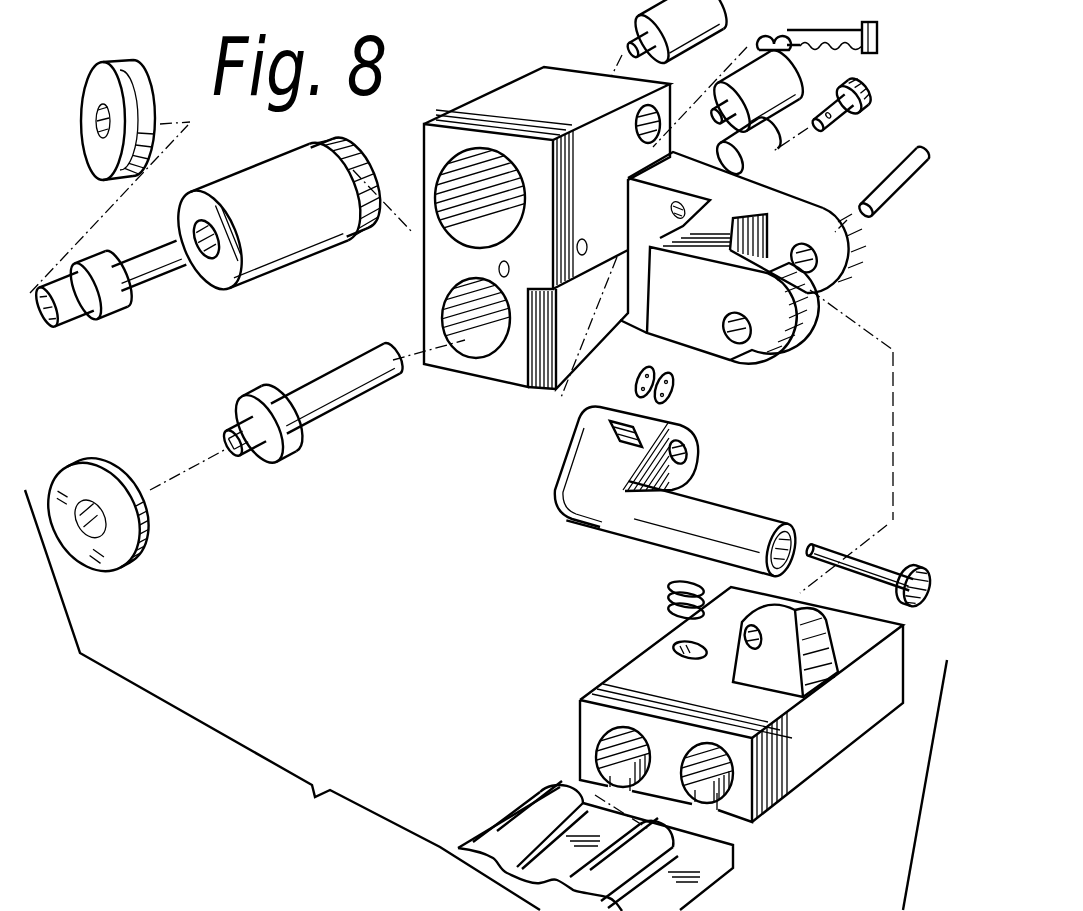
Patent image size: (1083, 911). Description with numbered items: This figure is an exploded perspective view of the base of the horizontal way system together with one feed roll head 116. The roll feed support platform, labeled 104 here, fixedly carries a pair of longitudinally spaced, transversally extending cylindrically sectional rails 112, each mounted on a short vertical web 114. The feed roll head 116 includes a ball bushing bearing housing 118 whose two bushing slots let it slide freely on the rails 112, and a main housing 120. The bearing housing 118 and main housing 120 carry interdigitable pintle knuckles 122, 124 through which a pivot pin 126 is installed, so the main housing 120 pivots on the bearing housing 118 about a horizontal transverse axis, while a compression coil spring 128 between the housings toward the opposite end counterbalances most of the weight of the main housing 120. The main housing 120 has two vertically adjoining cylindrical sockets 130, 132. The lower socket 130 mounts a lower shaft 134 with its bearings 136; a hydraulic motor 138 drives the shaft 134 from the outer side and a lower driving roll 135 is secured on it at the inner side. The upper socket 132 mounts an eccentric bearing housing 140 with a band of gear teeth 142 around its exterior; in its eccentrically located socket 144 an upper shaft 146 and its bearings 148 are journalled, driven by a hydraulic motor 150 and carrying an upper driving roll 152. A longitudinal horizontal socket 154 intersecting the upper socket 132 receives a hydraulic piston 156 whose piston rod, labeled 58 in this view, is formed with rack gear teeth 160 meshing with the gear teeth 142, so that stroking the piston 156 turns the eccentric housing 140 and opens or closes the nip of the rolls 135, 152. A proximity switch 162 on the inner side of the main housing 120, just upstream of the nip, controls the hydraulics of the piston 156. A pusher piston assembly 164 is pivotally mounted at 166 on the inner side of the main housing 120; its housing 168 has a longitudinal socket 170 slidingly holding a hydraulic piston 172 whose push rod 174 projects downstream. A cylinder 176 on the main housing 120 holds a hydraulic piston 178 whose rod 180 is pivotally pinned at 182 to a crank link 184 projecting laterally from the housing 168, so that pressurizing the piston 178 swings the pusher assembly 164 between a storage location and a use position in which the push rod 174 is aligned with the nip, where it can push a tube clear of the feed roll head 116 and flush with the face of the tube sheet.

The screw 58 is at (828, 24).
The rail 104 is at (698, 867).
The cylindrically sectional rails 112 is at (523, 827).
The short vertical webs 114 is at (513, 866).
The feed roll head 116 is at (486, 700).
The ball bushing bearing housing 118 is at (622, 688).
The main housing 120 is at (481, 113).
The pintle knuckles 122 is at (779, 674).
The pintle knuckles 124 is at (840, 272).
The pivot pin 126 is at (893, 178).
The compression coil spring 128 is at (676, 588).
The lower cylindrical socket 130 is at (461, 347).
The upper cylindrical socket 132 is at (425, 243).
The lower shaft 134 is at (366, 400).
The lower driving roll 135 is at (100, 458).
The bearings 136 is at (296, 455).
The hydraulic motor 138 is at (770, 93).
The eccentric bearing housing 140 is at (290, 262).
The band of gear teeth 142 is at (290, 160).
The eccentrically located socket 144 is at (193, 230).
The upper shaft 146 is at (152, 287).
The bearings 148 is at (113, 307).
The hydraulic motor 150 is at (646, 16).
The upper driving roll 152 is at (100, 97).
The longitudinal horizontal socket 154 is at (636, 130).
The hydraulic piston 156 is at (878, 38).
The rack gear teeth 160 is at (766, 30).
The proximity switch 162 is at (510, 254).
The pusher piston assembly 164 is at (570, 544).
The pivotal mounting 166 is at (600, 236).
The housing 168 is at (562, 457).
The longitudinally aligned socket 170 is at (792, 530).
The hydraulic piston 172 is at (927, 577).
The push rod 174 is at (832, 553).
The cylinder 176 is at (768, 170).
The hydraulic piston 178 is at (868, 105).
The piston rod 180 is at (840, 108).
The pivot pin connection 182 is at (662, 392).
The crank link 184 is at (642, 433).